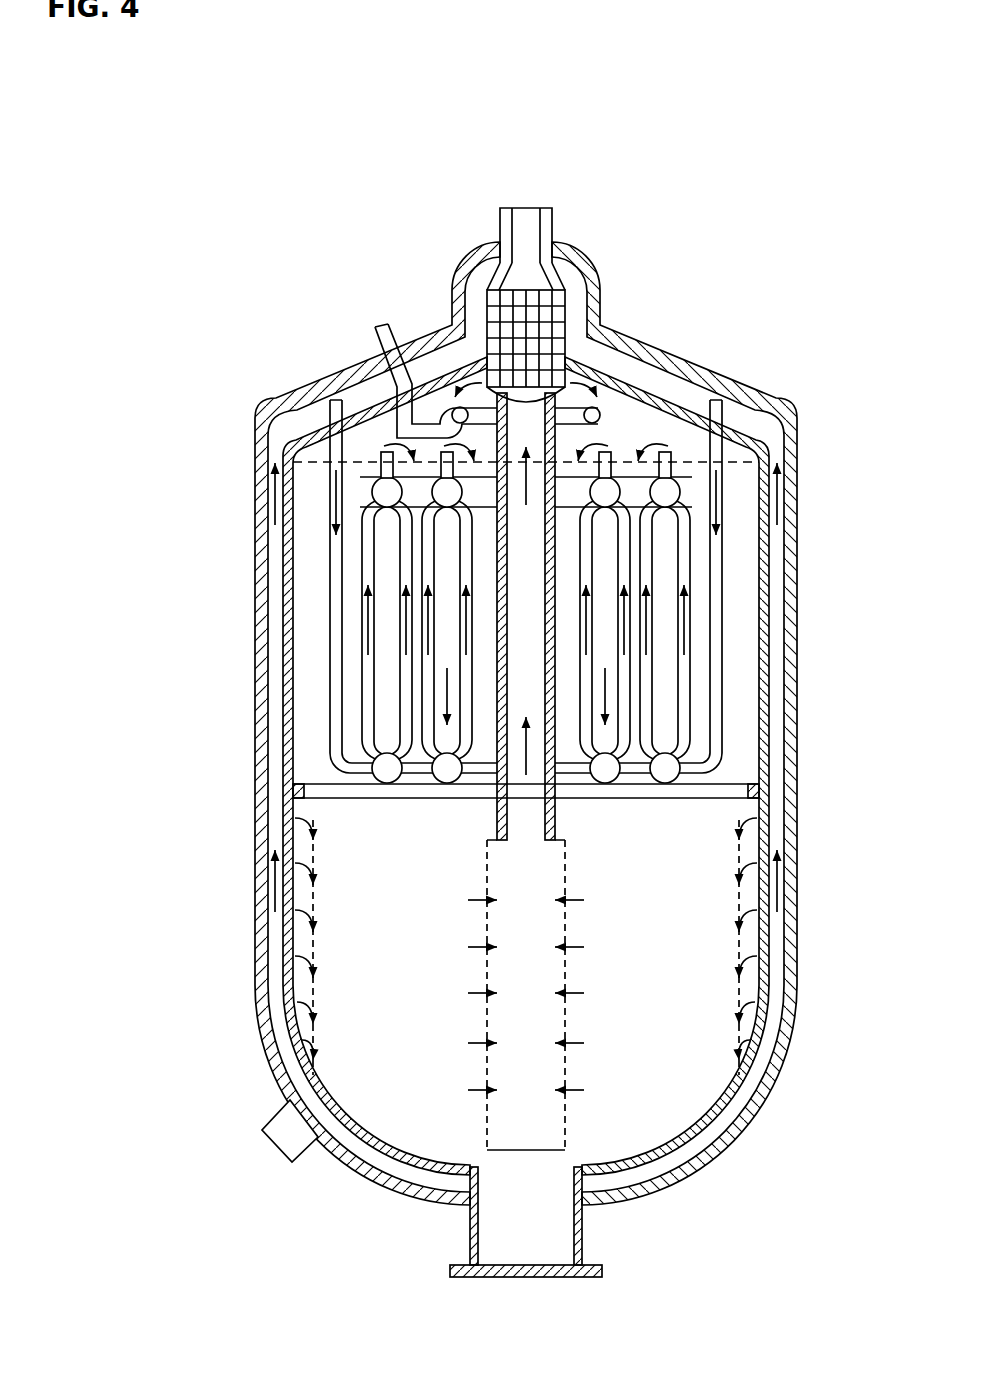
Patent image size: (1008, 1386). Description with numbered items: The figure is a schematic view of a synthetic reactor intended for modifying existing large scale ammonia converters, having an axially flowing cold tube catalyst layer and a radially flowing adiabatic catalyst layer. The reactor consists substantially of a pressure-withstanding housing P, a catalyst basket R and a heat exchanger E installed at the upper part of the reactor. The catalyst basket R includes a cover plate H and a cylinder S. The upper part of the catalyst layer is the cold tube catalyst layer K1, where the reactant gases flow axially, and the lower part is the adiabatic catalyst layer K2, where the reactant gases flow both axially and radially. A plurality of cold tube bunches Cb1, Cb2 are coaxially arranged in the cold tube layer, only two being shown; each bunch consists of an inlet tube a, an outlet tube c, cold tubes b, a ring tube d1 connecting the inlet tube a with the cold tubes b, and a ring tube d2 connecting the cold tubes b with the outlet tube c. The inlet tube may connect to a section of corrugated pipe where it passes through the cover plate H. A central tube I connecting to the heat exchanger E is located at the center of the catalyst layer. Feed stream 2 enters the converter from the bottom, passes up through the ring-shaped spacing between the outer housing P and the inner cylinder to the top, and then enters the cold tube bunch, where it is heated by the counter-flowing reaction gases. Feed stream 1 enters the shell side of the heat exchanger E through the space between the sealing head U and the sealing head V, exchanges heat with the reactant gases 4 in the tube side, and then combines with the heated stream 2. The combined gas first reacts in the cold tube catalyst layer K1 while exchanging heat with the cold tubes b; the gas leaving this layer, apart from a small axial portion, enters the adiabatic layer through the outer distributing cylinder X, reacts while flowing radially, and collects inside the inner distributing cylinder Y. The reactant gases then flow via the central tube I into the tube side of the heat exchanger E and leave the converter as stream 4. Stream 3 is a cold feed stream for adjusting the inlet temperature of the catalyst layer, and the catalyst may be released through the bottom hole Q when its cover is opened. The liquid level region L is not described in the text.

The heat exchanger E is at (500, 297).
The housing P is at (345, 369).
The cover plate H is at (316, 420).
The cylinder S is at (285, 535).
The cold feed stream 3 is at (378, 326).
The feed stream 1 is at (507, 247).
The reactant gases 4 is at (527, 208).
The sealing head V is at (540, 233).
The sealing head U is at (565, 277).
The inlet tube a is at (668, 453).
The outlet tube c is at (668, 478).
The ring tube d2 is at (666, 490).
The cold tubes b is at (683, 562).
The cold tube catalyst layer K1 is at (740, 610).
The central tube I is at (553, 668).
The ring tube d1 is at (663, 765).
The cold tube bunch Cb2 is at (445, 677).
The cold tube bunch Cb1 is at (388, 738).
The catalyst basket R is at (357, 812).
The liquid L is at (360, 814).
The outer distributing cylinder X is at (313, 943).
The adiabatic catalyst layer K2 is at (662, 870).
The inner distributing cylinder Y is at (565, 880).
The feed stream 2 is at (282, 1140).
The bottom hole Q is at (490, 1232).